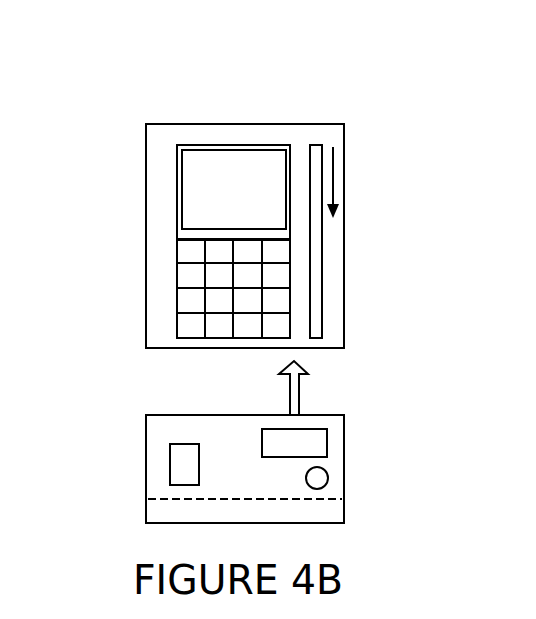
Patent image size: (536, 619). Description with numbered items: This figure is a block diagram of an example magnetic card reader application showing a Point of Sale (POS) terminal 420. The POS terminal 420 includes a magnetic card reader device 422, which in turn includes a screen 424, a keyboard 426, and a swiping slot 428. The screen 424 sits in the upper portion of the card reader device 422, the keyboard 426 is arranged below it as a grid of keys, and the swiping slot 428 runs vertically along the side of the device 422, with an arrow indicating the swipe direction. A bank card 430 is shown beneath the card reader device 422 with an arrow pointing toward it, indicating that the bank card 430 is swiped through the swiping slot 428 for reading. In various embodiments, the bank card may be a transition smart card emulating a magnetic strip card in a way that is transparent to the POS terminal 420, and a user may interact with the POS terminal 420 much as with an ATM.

The Point of Sale (POS) terminal 420 is at (348, 49).
The magnetic card reader device 422 is at (146, 157).
The screen 424 is at (236, 148).
The keyboard 426 is at (209, 330).
The swiping slot 428 is at (297, 157).
The bank card 430 is at (138, 466).